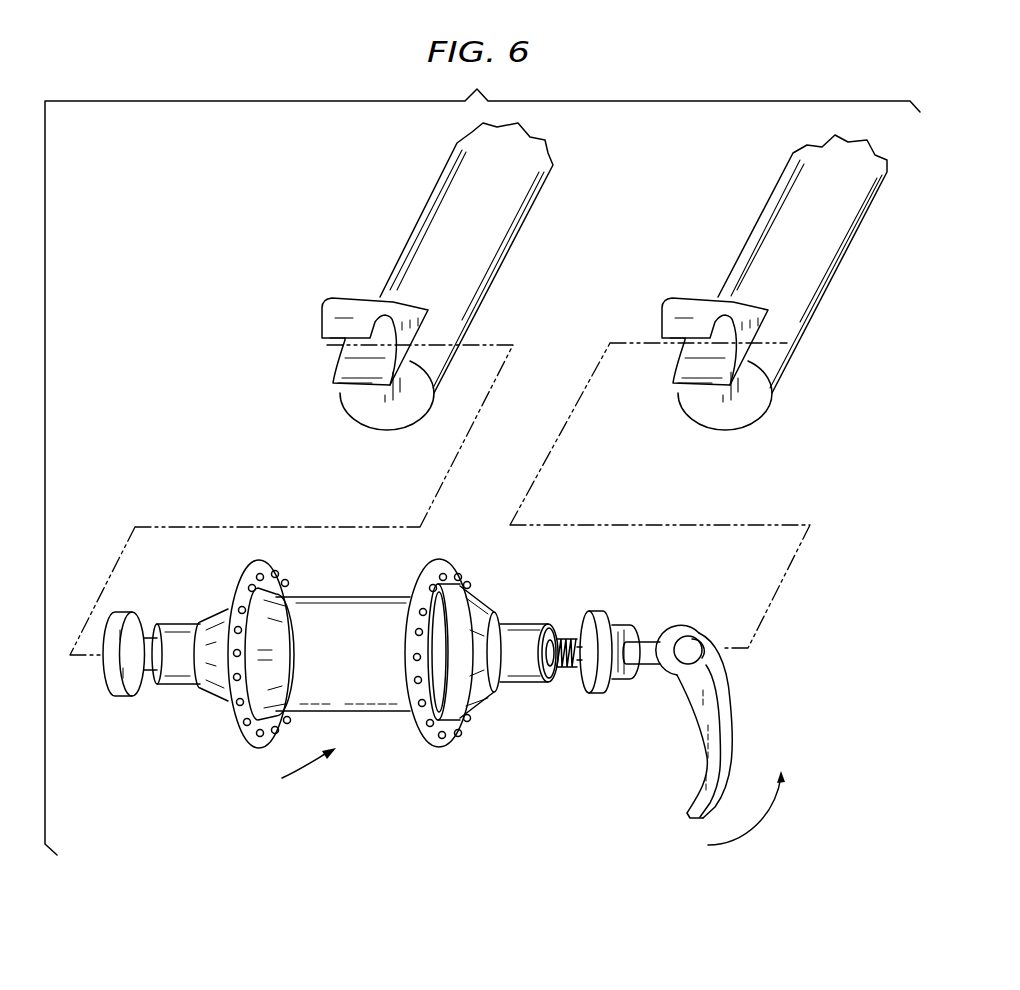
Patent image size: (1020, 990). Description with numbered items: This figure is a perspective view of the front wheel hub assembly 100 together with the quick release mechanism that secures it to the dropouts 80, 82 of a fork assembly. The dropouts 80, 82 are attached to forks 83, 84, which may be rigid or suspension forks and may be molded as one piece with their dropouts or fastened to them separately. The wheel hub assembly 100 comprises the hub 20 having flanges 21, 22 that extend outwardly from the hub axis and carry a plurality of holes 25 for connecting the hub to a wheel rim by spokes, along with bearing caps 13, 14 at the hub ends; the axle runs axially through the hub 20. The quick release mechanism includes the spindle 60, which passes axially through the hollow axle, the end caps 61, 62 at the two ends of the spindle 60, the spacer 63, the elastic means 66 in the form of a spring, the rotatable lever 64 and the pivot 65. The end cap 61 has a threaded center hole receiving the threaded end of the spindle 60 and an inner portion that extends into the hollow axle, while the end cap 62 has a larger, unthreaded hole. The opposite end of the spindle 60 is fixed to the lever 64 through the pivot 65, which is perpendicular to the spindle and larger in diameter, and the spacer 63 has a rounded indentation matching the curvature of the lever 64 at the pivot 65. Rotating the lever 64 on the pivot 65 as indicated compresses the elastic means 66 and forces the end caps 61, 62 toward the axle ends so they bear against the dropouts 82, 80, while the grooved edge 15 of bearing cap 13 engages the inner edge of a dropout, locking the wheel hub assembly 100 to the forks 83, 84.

The bearing cap 13 is at (481, 600).
The bearing cap 14 is at (217, 612).
The grooved edge 15 is at (503, 690).
The hub 20 is at (350, 598).
The flange 21 is at (440, 562).
The flange 22 is at (267, 568).
The holes 25 is at (245, 728).
The spindle 60 is at (645, 641).
The end cap 61 is at (110, 672).
The end cap 62 is at (600, 688).
The spacer 63 is at (614, 672).
The lever 64 is at (722, 701).
The pivot 65 is at (690, 637).
The elastic means 66 is at (565, 675).
The dropout 80 is at (672, 312).
The dropout 82 is at (330, 313).
The fork 83 is at (765, 222).
The fork 84 is at (428, 217).
The wheel hub assembly 100 is at (293, 772).